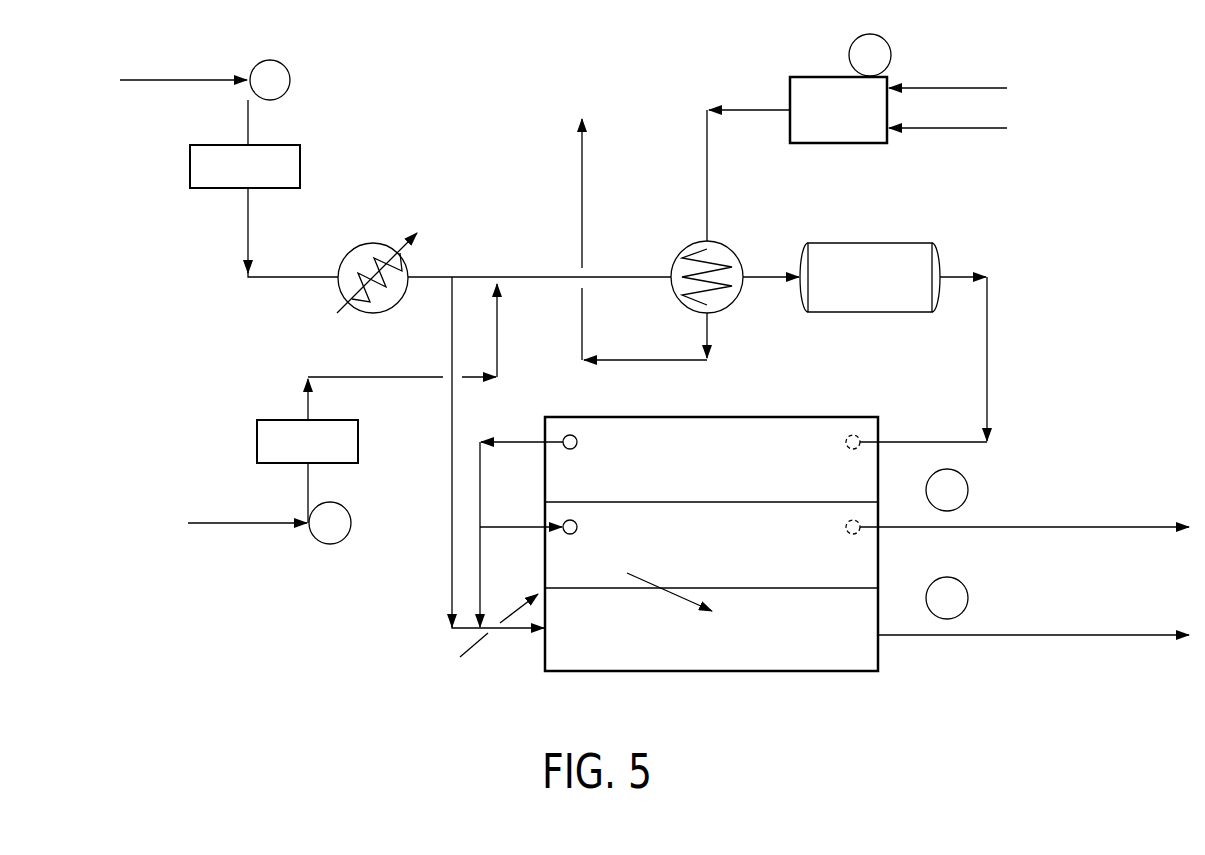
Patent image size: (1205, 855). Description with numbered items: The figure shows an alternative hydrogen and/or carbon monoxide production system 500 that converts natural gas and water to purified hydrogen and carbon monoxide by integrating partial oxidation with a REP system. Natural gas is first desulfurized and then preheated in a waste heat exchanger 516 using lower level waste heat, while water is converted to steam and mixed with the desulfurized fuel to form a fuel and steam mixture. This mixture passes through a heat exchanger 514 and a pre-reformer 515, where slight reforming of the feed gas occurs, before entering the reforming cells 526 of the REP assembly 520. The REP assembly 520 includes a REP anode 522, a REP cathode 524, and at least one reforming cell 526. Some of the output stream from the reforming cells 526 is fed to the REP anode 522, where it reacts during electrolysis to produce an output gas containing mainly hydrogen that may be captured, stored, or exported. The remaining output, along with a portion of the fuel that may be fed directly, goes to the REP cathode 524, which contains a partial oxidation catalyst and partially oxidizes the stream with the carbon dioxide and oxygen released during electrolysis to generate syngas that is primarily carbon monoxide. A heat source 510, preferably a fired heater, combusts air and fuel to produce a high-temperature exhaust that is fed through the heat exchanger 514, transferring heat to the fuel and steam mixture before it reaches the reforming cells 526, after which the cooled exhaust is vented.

The hydrogen and/or carbon monoxide production system 500 is at (528, 162).
The heat source 510 is at (807, 77).
The heat exchanger 514 is at (732, 250).
The pre-reformer 515 is at (860, 243).
The waste heat exchanger 516 is at (373, 315).
The REP assembly 520 is at (737, 684).
The REP anode 522 is at (878, 560).
The REP cathode 524 is at (878, 658).
The reforming cell 526 is at (600, 415).